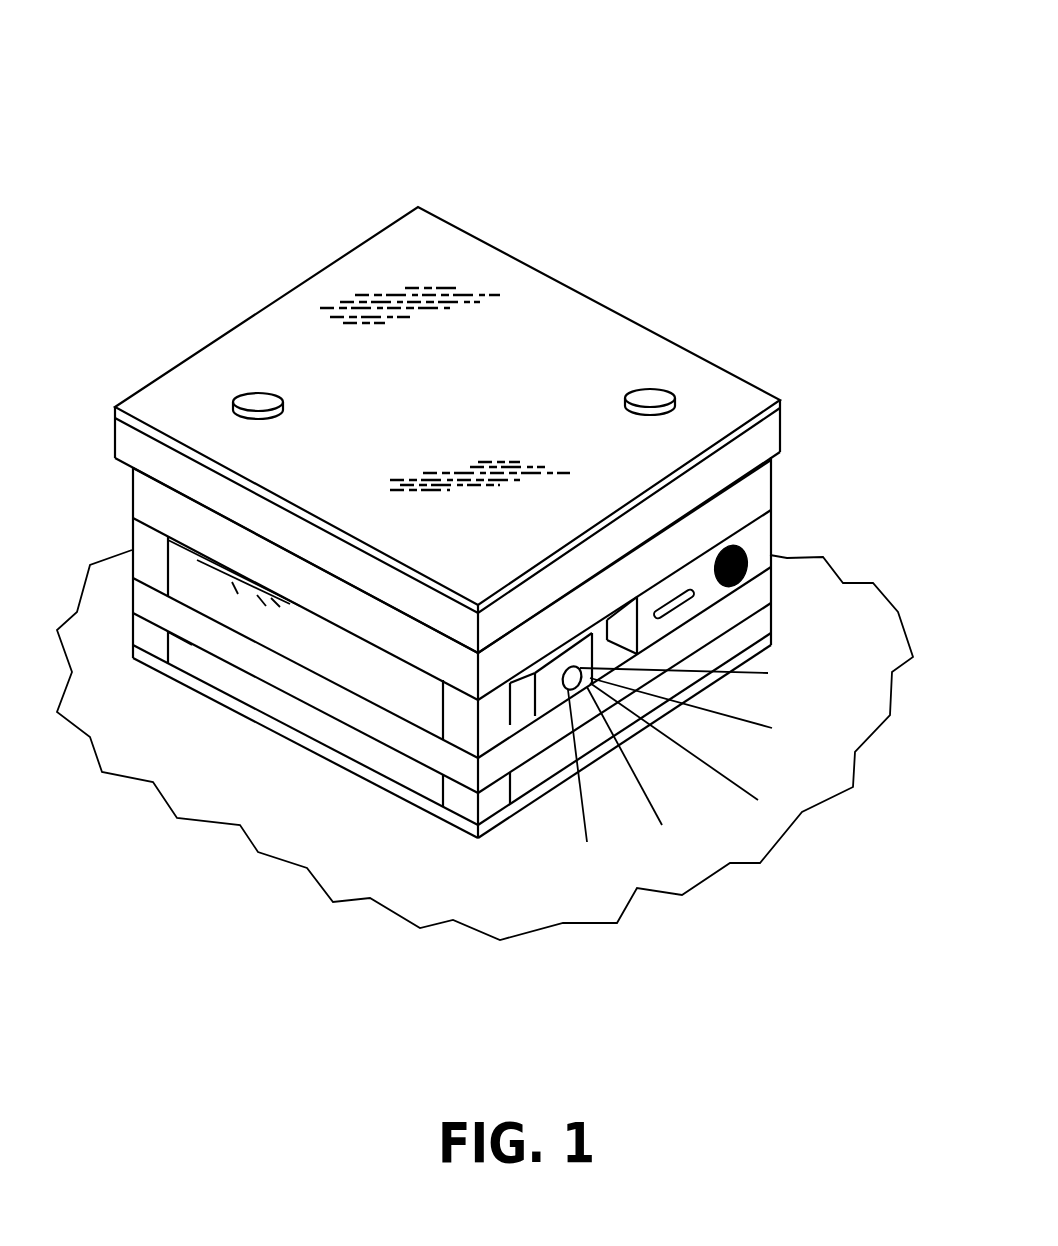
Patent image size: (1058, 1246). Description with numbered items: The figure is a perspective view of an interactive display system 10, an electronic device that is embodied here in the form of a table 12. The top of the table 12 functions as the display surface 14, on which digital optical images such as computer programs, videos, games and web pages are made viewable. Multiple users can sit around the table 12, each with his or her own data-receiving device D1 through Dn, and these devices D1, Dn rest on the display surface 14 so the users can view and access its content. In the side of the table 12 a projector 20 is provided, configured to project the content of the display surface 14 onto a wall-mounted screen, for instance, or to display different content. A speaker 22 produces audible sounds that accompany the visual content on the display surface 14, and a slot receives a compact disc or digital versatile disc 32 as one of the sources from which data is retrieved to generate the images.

The interactive display system 10 is at (822, 120).
The table 12 is at (127, 509).
The display surface 14 is at (592, 297).
The projector 20 is at (548, 722).
The speaker 22 is at (748, 543).
The compact disc or digital versatile disc 32 is at (684, 612).
The data-receiving device D1 is at (255, 398).
The data-receiving device Dn is at (653, 392).